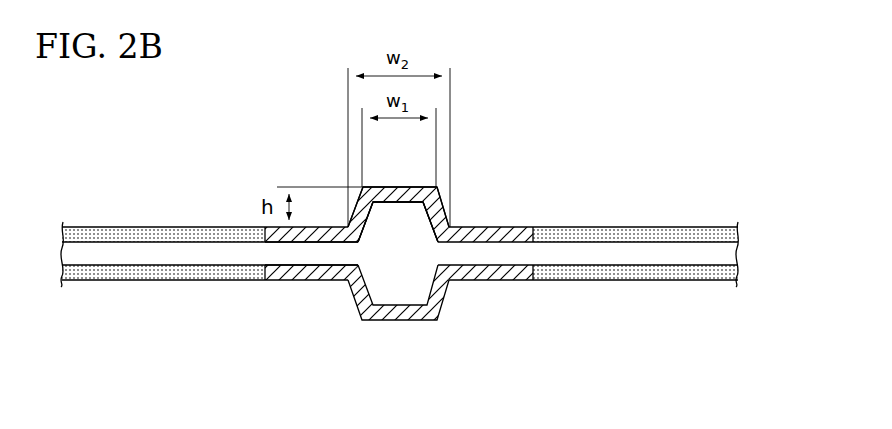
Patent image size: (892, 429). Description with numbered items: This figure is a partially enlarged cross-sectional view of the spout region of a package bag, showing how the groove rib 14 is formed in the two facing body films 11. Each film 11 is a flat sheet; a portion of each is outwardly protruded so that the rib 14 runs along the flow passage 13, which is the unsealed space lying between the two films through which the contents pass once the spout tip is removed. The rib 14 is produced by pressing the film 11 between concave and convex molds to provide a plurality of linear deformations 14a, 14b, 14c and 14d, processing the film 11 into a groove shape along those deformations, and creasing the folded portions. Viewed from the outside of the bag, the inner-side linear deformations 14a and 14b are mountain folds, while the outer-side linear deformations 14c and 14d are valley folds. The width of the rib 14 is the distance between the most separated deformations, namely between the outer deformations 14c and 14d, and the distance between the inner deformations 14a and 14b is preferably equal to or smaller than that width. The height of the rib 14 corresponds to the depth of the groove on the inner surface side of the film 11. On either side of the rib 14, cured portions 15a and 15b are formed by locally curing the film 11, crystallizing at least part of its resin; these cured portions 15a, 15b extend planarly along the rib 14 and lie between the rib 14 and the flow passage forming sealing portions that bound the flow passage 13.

The body film 11 is at (515, 230).
The flow passage 13 is at (313, 252).
The groove rib 14 is at (403, 190).
The linear deformation 14a is at (361, 187).
The linear deformation 14b is at (441, 186).
The linear deformation 14c is at (357, 240).
The linear deformation 14d is at (450, 227).
The cured portion 15a is at (145, 228).
The cured portion 15b is at (630, 228).